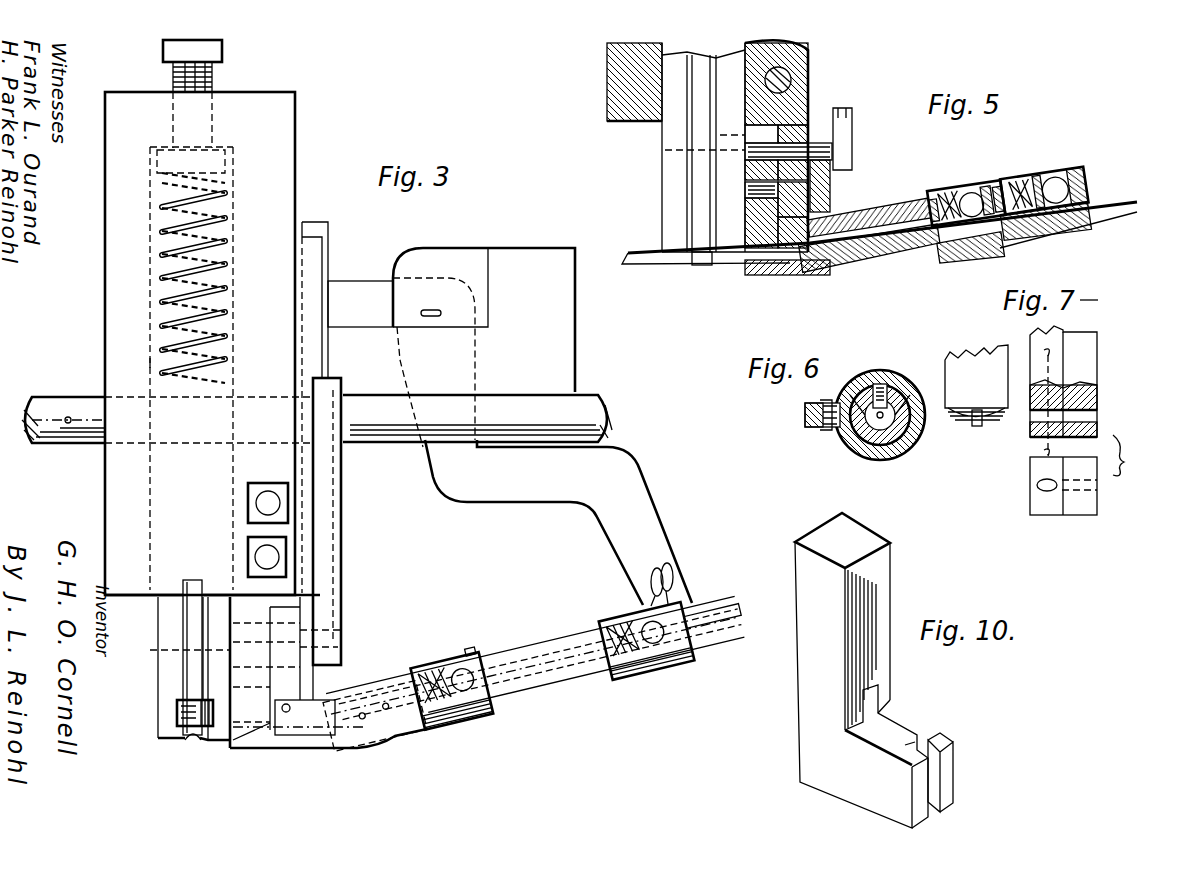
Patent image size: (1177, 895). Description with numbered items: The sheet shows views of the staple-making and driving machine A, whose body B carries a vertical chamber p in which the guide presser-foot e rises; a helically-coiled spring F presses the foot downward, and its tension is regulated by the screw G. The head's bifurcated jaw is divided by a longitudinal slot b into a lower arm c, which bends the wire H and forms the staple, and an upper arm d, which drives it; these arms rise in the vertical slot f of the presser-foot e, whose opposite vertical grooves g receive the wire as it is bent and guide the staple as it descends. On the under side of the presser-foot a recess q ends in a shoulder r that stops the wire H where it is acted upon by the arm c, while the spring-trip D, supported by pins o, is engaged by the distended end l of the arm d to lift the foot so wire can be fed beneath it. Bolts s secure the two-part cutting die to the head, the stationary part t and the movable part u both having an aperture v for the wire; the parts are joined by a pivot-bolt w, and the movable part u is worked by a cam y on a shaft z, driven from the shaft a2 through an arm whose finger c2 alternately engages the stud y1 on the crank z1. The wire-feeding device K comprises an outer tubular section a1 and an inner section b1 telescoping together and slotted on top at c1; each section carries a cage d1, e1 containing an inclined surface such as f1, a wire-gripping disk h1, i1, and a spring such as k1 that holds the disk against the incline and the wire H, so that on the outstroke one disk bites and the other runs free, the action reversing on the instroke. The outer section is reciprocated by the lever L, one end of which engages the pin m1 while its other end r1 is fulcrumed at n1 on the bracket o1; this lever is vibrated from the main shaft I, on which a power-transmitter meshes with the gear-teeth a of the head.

In FIG. 3, the staple bending and driving machine A is at (186, 343).
In FIG. 3, the body B is at (208, 368).
In FIG. 3, the screw G is at (201, 94).
In FIG. 3, the helically-coiled spring F is at (166, 302).
In FIG. 3, the vertical chamber p is at (152, 363).
In FIG. 3, the main shaft I is at (52, 385).
In FIG. 3, the shaft a2 is at (330, 412).
In FIG. 3, the end of lever r1 is at (360, 304).
In FIG. 3, the bracket o1 is at (484, 347).
In FIG. 3, the fulcrum n1 is at (433, 299).
In FIG. 3, the lever L is at (607, 485).
In FIG. 3, the pins o is at (322, 555).
In FIG. 3, the bolts s is at (268, 483).
In FIG. 3, the upper arm d is at (190, 604).
In FIG. 3, the guide presser-foot e is at (179, 672).
In FIG. 10, the guide presser-foot e is at (800, 636).
In FIG. 3, the vertical slot f is at (183, 657).
In FIG. 10, the vertical slot f is at (938, 818).
In FIG. 3, the spring-trip D is at (177, 708).
In FIG. 3, the lower arm c is at (185, 740).
In FIG. 3, the stationary die part t is at (236, 667).
In FIG. 7, the stationary die part t is at (1052, 345).
In FIG. 3, the movable die part u is at (284, 704).
In FIG. 7, the movable die part u is at (1073, 460).
In FIG. 3, the longitudinal slot b is at (535, 665).
In FIG. 3, the outer tubular section a1 is at (375, 706).
In FIG. 5, the outer tubular section a1 is at (870, 215).
In FIG. 3, the cage or chamber d1 is at (451, 681).
In FIG. 5, the cage or chamber d1 is at (970, 205).
In FIG. 3, the wire-feeding device K is at (519, 657).
In FIG. 3, the cage or chamber e1 is at (633, 604).
In FIG. 5, the cage or chamber e1 is at (1040, 178).
In FIG. 3, the wire H is at (712, 628).
In FIG. 5, the wire H is at (640, 255).
In FIG. 3, the pin m1 is at (672, 576).
In FIG. 5, the pivot-bolt w is at (798, 140).
In FIG. 5, the stud y1 is at (838, 158).
In FIG. 5, the finger c2 is at (852, 132).
In FIG. 5, the crank z1 is at (745, 190).
In FIG. 5, the cam y is at (798, 193).
In FIG. 5, the shaft z is at (828, 205).
In FIG. 5, the wire-gripping disk h1 is at (963, 203).
In FIG. 5, the spring k1 is at (925, 208).
In FIG. 5, the inclined surface f1 is at (990, 187).
In FIG. 5, the laterally-distended end l is at (1020, 187).
In FIG. 5, the wire-gripping disk i1 is at (1055, 190).
In FIG. 5, the vertical grooves g is at (1083, 180).
In FIG. 10, the vertical grooves g is at (900, 728).
In FIG. 6, the gear-teeth a is at (905, 450).
In FIG. 6, the longitudinal slot c1 is at (880, 384).
In FIG. 6, the inner tubular section b1 is at (855, 398).
In FIG. 7, the aperture v is at (977, 438).
In FIG. 10, the recess q is at (895, 820).
In FIG. 10, the shoulder r is at (867, 813).